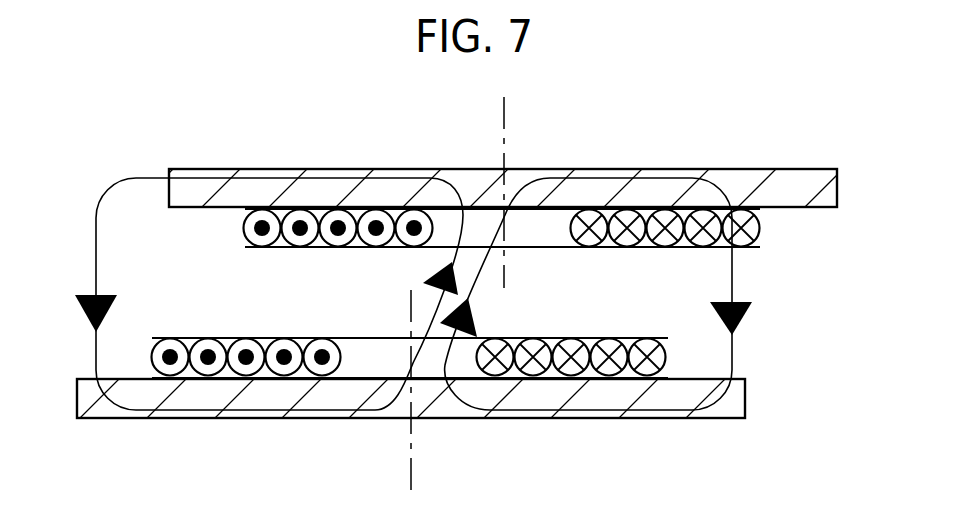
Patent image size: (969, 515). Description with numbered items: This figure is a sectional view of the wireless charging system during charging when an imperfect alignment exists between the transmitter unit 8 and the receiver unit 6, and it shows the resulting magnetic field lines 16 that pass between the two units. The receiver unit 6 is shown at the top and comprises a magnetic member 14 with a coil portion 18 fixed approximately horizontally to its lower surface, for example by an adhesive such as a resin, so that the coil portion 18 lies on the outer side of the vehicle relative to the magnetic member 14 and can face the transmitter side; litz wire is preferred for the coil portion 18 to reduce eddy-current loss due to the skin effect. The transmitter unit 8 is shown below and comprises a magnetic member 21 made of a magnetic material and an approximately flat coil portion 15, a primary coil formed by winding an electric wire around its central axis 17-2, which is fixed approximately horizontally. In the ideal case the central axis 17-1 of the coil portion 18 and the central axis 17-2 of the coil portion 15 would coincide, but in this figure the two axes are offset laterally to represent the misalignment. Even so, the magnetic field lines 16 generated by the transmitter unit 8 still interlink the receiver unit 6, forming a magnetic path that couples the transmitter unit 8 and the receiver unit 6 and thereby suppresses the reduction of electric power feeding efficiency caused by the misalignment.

The receiver unit 6 is at (522, 210).
The transmitter unit 8 is at (460, 377).
The magnetic member 14 is at (268, 168).
The coil portion 15 is at (322, 338).
The magnetic flux 16 is at (95, 258).
The central axis 17-1 is at (505, 125).
The central axis 17-2 is at (412, 466).
The coil portion 18 is at (628, 248).
The magnetic member 21 is at (268, 418).